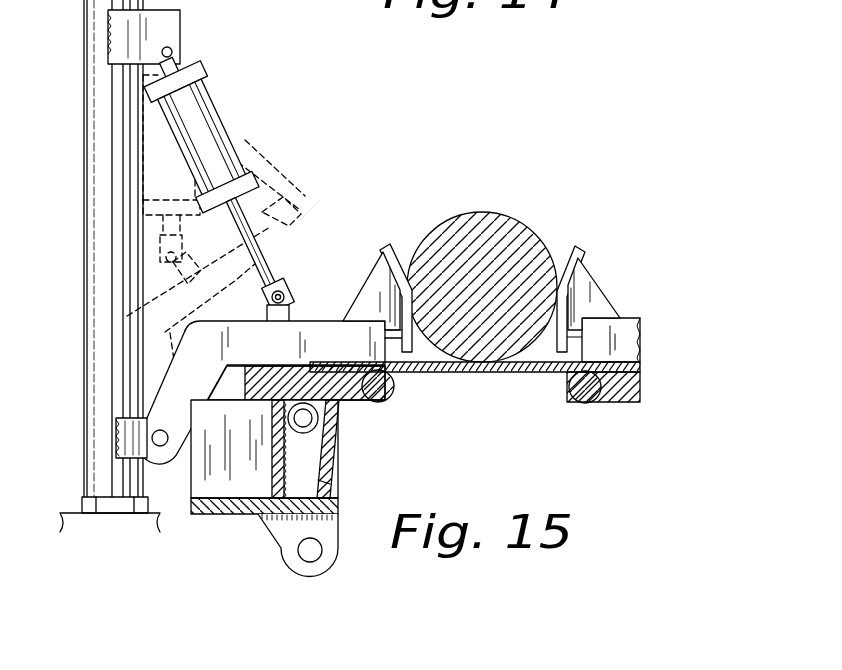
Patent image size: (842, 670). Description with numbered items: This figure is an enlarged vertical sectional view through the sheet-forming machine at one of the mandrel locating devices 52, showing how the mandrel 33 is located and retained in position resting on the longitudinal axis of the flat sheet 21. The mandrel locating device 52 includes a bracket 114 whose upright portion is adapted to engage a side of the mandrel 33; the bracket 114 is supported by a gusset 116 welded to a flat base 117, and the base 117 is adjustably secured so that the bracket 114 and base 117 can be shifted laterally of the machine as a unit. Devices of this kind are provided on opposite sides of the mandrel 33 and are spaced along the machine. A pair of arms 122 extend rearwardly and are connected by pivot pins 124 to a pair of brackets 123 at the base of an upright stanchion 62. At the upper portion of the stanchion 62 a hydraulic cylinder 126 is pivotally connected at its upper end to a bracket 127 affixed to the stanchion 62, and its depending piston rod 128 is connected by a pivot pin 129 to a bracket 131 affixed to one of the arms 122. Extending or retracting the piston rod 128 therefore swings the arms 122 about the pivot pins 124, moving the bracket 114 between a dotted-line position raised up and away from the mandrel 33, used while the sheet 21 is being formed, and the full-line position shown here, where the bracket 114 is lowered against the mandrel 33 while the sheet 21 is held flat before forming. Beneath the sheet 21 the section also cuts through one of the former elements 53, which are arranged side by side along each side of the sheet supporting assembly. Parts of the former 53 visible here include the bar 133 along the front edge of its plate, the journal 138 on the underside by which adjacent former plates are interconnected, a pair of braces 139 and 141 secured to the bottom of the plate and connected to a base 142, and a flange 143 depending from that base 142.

The sheet 21 is at (495, 370).
The mandrel 33 is at (507, 228).
The mandrel locating device 52 is at (322, 197).
The former element 53 is at (336, 440).
The stanchion 62 is at (95, 289).
The bracket 114 is at (388, 246).
The gusset 116 is at (382, 292).
The flat base 117 is at (395, 376).
The arm 122 is at (312, 326).
The bracket 123 is at (118, 450).
The pivot pin 124 is at (162, 447).
The hydraulic cylinder 126 is at (218, 120).
The bracket 127 is at (170, 26).
The piston rod 128 is at (258, 246).
The pivot pin 129 is at (285, 288).
The bracket 131 is at (298, 303).
The bar 133 is at (388, 392).
The journal 138 is at (320, 420).
The brace 139 is at (290, 468).
The brace 141 is at (322, 486).
The base 142 is at (240, 514).
The flange 143 is at (285, 546).